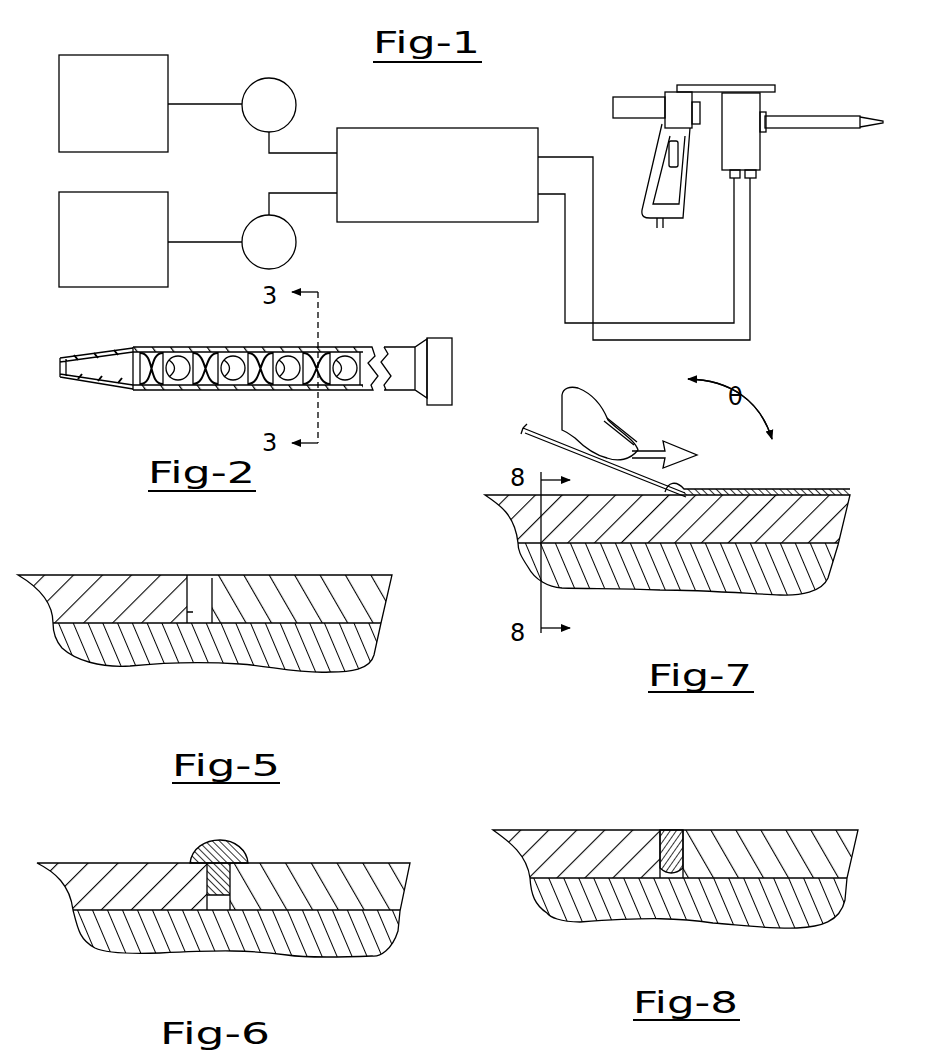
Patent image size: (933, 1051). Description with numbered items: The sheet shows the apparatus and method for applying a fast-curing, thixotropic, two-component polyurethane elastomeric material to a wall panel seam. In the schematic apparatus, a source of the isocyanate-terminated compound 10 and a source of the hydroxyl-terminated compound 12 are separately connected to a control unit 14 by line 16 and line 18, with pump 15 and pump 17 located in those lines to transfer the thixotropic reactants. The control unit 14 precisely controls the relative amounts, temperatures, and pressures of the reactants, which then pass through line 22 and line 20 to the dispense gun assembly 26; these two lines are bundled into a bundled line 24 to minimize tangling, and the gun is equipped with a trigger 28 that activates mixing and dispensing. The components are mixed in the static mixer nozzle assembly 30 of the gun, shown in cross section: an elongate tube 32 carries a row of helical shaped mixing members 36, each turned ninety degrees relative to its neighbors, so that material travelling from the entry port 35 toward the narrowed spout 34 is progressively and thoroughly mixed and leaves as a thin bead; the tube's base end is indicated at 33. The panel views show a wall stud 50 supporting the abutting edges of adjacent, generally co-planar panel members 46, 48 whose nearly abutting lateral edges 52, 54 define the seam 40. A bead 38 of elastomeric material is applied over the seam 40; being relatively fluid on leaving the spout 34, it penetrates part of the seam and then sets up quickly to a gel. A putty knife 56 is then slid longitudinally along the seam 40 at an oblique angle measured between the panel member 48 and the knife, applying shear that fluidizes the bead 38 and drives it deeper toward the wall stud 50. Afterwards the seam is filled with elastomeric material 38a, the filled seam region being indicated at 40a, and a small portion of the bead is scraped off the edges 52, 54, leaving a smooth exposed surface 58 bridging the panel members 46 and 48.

In FIG. 1, the source of the isocyanate-terminated compound 10 is at (99, 131).
In FIG. 1, the source of the hydroxyl-terminated compound 12 is at (99, 266).
In FIG. 1, the control unit 14 is at (438, 222).
In FIG. 1, the pump 15 is at (257, 119).
In FIG. 1, the line 16 is at (307, 152).
In FIG. 1, the pump 17 is at (257, 256).
In FIG. 1, the line 18 is at (303, 193).
In FIG. 1, the line 20 is at (565, 265).
In FIG. 1, the line 22 is at (563, 155).
In FIG. 1, the bundled line 24 is at (605, 340).
In FIG. 1, the dispense gun assembly 26 is at (707, 72).
In FIG. 1, the trigger 28 is at (700, 112).
In FIG. 1, the static mixer nozzle assembly 30 is at (807, 112).
In FIG. 2, the static mixer nozzle assembly 30 is at (267, 369).
In FIG. 1, the elongate tube 32 is at (770, 130).
In FIG. 2, the elongate tube 32 is at (330, 347).
In FIG. 2, the mixer base / coupling 33 is at (452, 373).
In FIG. 2, the spout 34 is at (100, 356).
In FIG. 2, the entry port 35 is at (60, 363).
In FIG. 2, the helical shaped mixing members 36 is at (222, 362).
In FIG. 6, the bead 38 is at (232, 850).
In FIG. 7, the bead 38 is at (767, 494).
In FIG. 8, the elastomeric material 38a is at (670, 830).
In FIG. 5, the seam 40 is at (190, 626).
In FIG. 8, the filled gap 40a is at (663, 896).
In FIG. 5, the panel member 46 is at (103, 592).
In FIG. 6, the panel member 46 is at (123, 878).
In FIG. 8, the panel member 46 is at (607, 830).
In FIG. 5, the panel member 48 is at (308, 588).
In FIG. 6, the panel member 48 is at (322, 866).
In FIG. 7, the panel member 48 is at (840, 523).
In FIG. 8, the panel member 48 is at (785, 846).
In FIG. 5, the wall stud 50 is at (127, 648).
In FIG. 6, the wall stud 50 is at (188, 943).
In FIG. 7, the wall stud 50 is at (818, 580).
In FIG. 8, the wall stud 50 is at (785, 906).
In FIG. 5, the lateral edge 52 is at (200, 610).
In FIG. 5, the lateral edge 54 is at (202, 580).
In FIG. 7, the putty knife 56 is at (545, 432).
In FIG. 8, the smooth exposed surface 58 is at (640, 830).